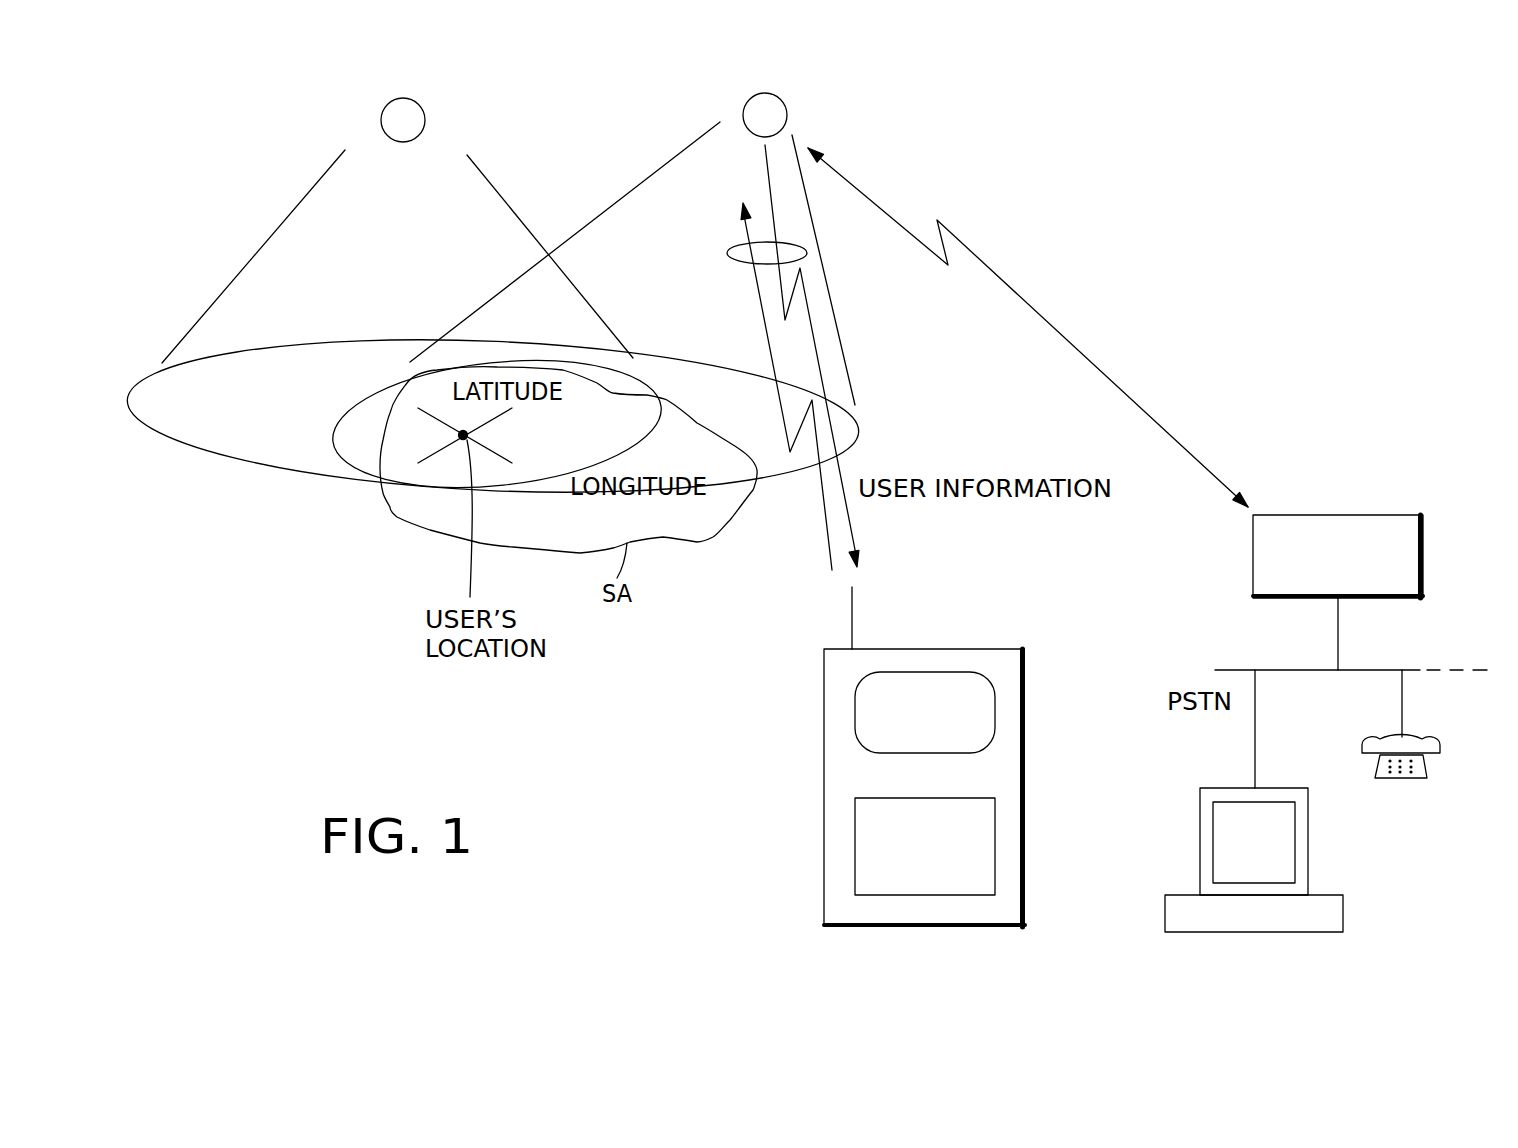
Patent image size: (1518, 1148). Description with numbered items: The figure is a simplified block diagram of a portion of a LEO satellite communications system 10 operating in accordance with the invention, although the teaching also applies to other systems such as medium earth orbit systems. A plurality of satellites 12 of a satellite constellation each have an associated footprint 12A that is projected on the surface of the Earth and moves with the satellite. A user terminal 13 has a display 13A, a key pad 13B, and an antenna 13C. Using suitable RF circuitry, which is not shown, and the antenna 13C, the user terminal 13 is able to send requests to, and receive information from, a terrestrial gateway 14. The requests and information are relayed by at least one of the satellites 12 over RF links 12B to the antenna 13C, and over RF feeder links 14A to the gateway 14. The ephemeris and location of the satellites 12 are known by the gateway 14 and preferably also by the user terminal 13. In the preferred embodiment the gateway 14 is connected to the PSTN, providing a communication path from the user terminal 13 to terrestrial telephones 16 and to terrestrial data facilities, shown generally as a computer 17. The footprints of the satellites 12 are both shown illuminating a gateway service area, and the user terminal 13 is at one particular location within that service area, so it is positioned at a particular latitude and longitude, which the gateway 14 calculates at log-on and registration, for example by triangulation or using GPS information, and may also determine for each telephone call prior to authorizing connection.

The LEO satellite communications system 10 is at (215, 240).
The satellite 12 is at (425, 113).
The footprint 12A is at (400, 333).
The RF link 12B is at (727, 252).
The user terminal 13 is at (975, 757).
The display 13A is at (995, 708).
The key pad 13B is at (995, 850).
The antenna 13C is at (852, 623).
The terrestrial gateway 14 is at (1317, 512).
The RF feeder link 14A is at (1038, 312).
The terrestrial telephone 16 is at (1428, 777).
The computer 17 is at (1345, 908).